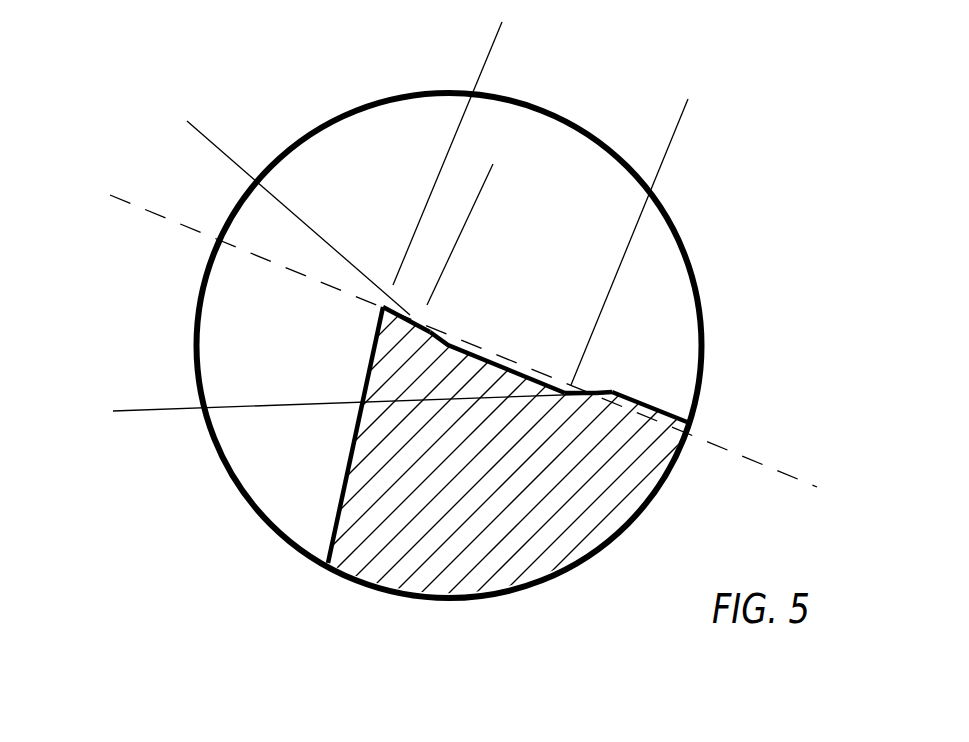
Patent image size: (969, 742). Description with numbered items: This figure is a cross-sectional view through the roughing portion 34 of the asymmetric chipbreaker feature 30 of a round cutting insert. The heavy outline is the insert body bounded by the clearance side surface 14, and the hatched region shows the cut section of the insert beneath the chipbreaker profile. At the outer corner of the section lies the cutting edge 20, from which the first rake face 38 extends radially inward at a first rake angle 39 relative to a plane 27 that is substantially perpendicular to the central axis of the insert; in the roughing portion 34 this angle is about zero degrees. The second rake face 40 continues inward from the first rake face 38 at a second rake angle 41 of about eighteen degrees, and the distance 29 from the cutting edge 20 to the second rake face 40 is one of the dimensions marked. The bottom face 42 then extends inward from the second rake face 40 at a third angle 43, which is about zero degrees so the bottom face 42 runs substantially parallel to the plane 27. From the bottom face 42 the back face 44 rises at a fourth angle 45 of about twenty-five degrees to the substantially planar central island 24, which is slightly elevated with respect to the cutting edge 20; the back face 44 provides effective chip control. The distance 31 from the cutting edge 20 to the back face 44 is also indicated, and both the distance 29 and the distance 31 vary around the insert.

The clearance side surface 14 is at (294, 478).
The cutting edge 20 is at (382, 309).
The central island 24 is at (655, 402).
The plane 27 is at (128, 204).
The distance 29 is at (447, 168).
The asymmetric chipbreaker feature 30 is at (726, 246).
The distance 31 is at (495, 46).
The roughing portion 34 is at (649, 244).
The first rake face 38 is at (406, 298).
The first rake angle 39 is at (740, 417).
The second rake face 40 is at (445, 336).
The second rake angle 41 is at (224, 158).
The bottom face 42 is at (522, 372).
The third angle 43 is at (800, 415).
The back face 44 is at (600, 397).
The fourth angle 45 is at (185, 231).